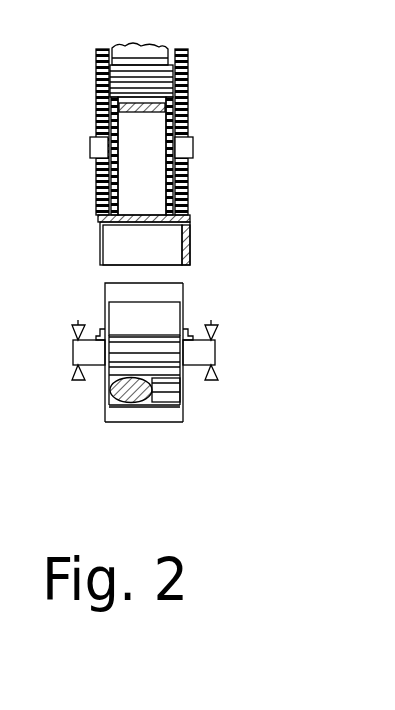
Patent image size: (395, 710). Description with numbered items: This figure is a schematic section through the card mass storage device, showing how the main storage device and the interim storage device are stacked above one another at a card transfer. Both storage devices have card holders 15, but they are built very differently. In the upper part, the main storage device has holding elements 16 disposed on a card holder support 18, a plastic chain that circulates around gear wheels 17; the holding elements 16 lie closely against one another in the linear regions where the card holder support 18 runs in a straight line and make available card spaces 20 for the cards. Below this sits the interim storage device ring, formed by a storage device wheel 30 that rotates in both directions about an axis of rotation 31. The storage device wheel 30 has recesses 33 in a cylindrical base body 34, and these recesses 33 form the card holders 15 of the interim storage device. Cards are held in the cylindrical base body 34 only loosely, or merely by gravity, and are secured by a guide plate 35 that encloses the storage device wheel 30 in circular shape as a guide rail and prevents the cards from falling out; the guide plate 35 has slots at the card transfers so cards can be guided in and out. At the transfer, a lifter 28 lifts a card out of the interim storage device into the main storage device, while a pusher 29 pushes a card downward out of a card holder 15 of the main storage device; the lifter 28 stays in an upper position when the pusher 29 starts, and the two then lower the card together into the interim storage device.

The card holder 15 is at (128, 315).
The holding element 16 is at (130, 47).
The gear wheel 17 is at (90, 147).
The card holder support 18 is at (108, 220).
The card space 20 is at (153, 308).
The lifter 28 is at (100, 333).
The pusher 29 is at (132, 121).
The storage device wheel 30 is at (125, 402).
The axis of rotation 31 is at (73, 353).
The recess 33 is at (172, 330).
The cylindrical base body 34 is at (165, 387).
The guide plate 35 is at (179, 283).